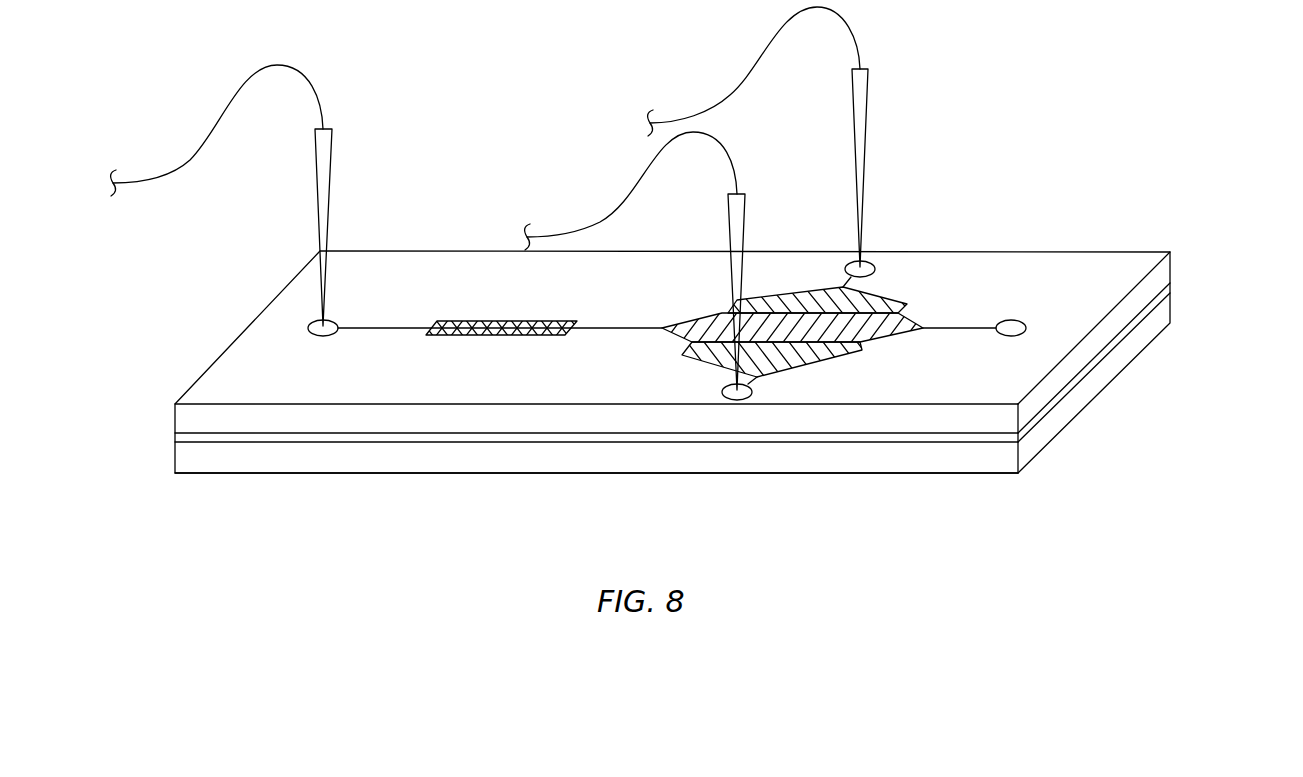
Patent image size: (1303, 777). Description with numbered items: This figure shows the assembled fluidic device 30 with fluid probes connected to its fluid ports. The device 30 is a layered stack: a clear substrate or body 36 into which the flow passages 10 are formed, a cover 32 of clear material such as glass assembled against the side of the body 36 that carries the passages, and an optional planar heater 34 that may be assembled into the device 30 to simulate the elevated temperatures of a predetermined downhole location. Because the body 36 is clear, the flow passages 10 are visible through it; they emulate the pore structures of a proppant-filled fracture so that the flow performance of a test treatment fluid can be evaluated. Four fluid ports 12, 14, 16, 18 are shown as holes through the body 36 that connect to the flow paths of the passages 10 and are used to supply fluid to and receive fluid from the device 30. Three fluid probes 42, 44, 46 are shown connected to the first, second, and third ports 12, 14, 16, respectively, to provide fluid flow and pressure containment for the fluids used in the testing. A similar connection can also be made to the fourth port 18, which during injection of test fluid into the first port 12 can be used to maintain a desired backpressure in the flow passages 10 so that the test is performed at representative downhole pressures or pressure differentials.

The flow passages 10 is at (961, 250).
The first fluid port 12 is at (313, 322).
The second fluid port 14 is at (866, 262).
The third fluid port 16 is at (748, 399).
The fourth fluid port 18 is at (1007, 320).
The fluidic device 30 is at (1222, 192).
The cover 32 is at (173, 438).
The planar heater 34 is at (173, 454).
The body 36 is at (173, 418).
The fluid probe 42 is at (332, 152).
The fluid probe 44 is at (868, 90).
The fluid probe 46 is at (745, 205).